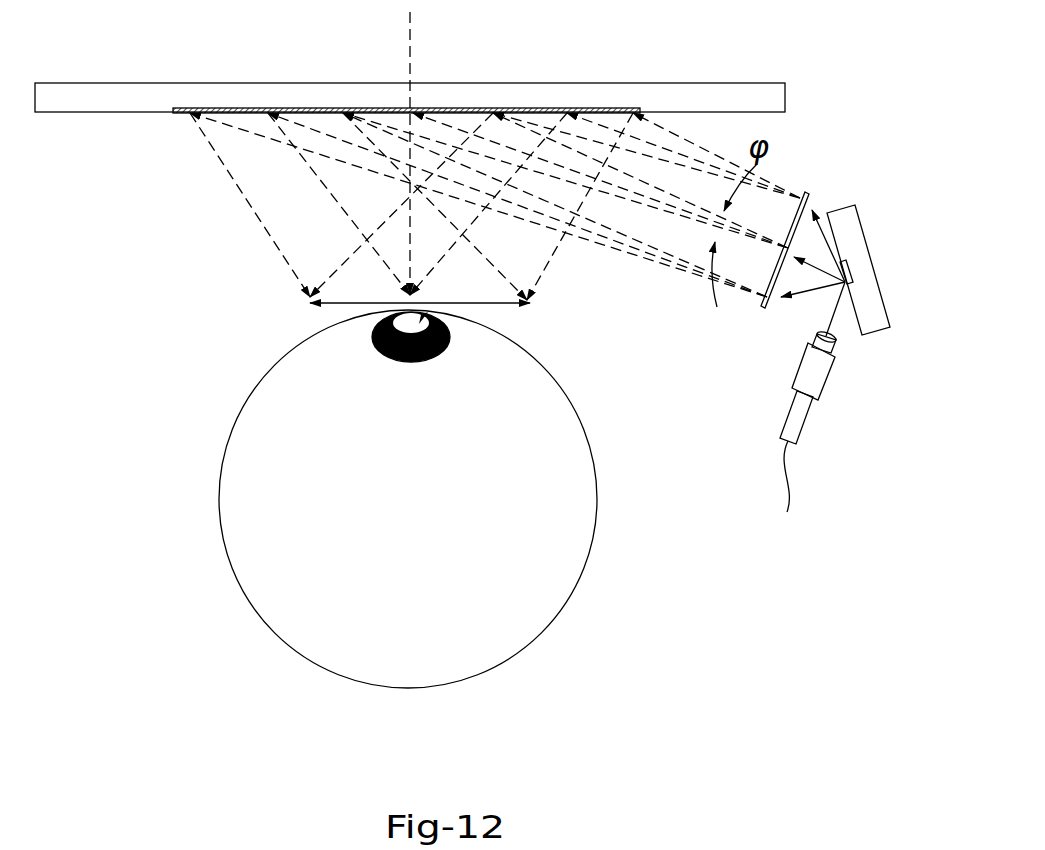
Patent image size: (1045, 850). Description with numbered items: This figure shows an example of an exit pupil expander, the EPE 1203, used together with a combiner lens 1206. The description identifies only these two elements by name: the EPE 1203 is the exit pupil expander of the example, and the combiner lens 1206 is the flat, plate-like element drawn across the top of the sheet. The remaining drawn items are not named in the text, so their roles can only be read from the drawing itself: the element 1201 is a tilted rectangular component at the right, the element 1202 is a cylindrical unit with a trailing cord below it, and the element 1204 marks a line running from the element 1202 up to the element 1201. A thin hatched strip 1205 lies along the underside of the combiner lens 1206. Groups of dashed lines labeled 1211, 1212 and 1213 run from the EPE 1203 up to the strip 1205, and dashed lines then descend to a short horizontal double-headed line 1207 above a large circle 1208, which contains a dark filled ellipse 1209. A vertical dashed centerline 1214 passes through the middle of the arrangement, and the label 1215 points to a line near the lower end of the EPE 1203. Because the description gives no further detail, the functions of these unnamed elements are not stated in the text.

The scanning mirror 1201 is at (851, 254).
The light source 1202 is at (832, 381).
The EPE 1203 is at (813, 191).
The light beam from light source 1204 is at (839, 323).
The hologram optical element 1205 is at (298, 107).
The combiner lens 1206 is at (483, 92).
The eye box 1207 is at (359, 299).
The eye 1208 is at (432, 312).
The pupil 1209 is at (457, 332).
The first scanning light 1211 is at (701, 142).
The second scanning light 1212 is at (644, 152).
The third scanning light 1213 is at (601, 149).
The optical axis 1214 is at (384, 206).
The scanned light beam 1215 is at (796, 305).